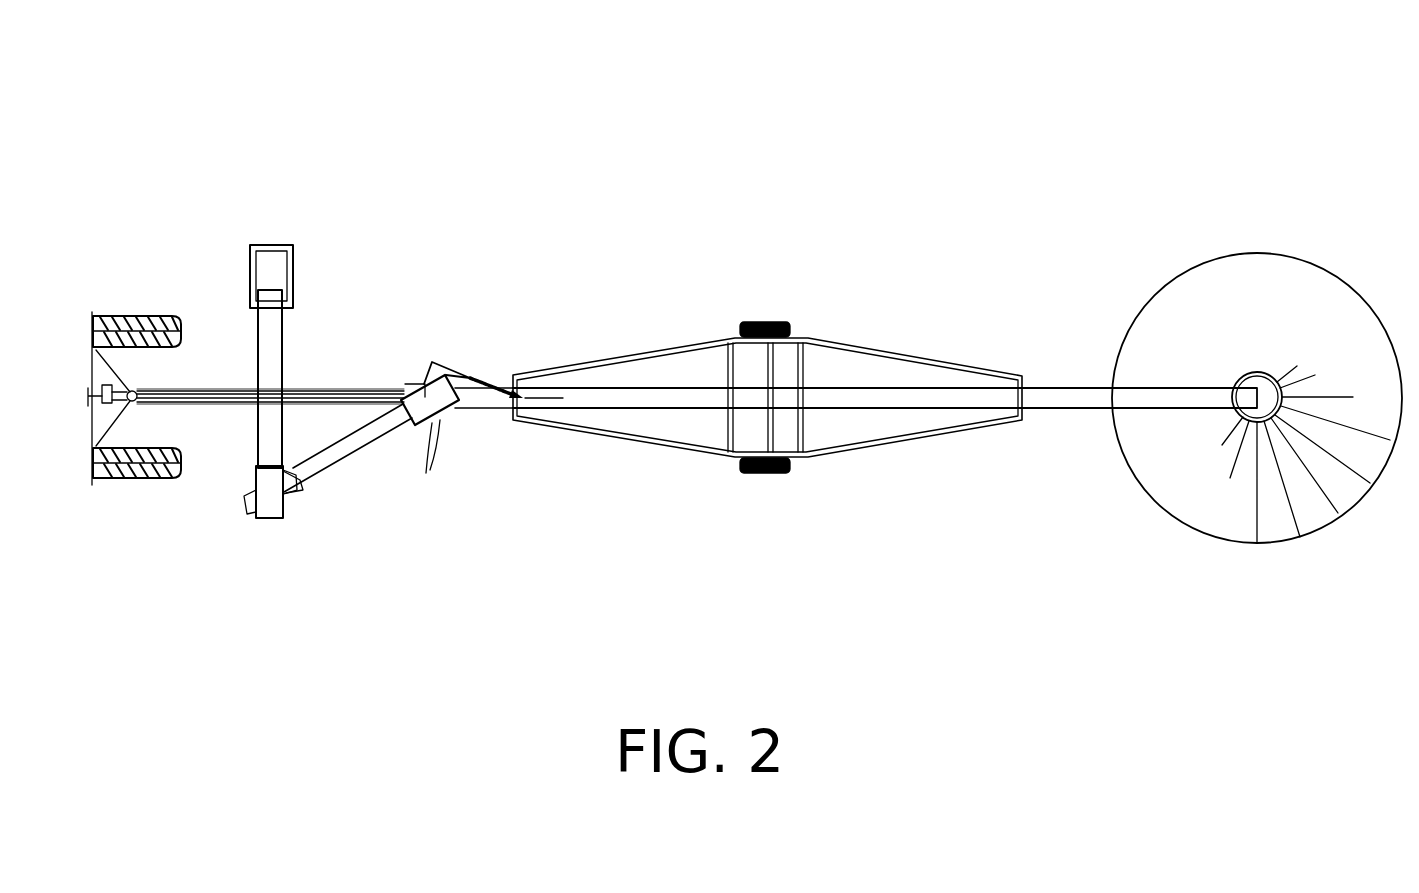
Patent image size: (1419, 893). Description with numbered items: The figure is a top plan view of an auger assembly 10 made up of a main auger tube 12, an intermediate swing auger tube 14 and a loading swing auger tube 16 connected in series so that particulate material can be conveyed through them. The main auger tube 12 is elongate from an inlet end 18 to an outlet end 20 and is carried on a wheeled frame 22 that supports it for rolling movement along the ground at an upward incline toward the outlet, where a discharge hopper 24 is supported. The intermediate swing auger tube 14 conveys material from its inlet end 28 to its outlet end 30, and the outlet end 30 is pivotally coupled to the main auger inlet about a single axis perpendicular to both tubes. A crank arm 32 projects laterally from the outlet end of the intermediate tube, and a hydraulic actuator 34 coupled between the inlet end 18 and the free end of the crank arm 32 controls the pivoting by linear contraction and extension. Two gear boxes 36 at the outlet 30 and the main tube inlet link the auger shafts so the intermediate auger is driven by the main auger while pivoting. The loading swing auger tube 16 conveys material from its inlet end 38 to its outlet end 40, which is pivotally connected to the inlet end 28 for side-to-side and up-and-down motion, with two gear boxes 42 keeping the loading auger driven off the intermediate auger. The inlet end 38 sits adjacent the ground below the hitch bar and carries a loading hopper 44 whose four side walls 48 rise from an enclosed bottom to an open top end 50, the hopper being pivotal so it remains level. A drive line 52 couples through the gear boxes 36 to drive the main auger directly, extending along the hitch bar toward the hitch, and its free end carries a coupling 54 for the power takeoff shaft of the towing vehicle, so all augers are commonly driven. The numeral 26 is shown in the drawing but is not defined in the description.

The auger assembly 10 is at (558, 190).
The main auger tube 12 is at (887, 397).
The intermediate swing auger tube 14 is at (355, 444).
The loading swing auger tube 16 is at (274, 360).
The inlet end 18 is at (470, 410).
The outlet end 20 is at (1220, 402).
The wheeled frame 22 is at (877, 447).
The discharge hopper 24 is at (1265, 385).
The axle assembly 26 is at (207, 398).
The inlet end 28 is at (297, 473).
The outlet end 30 is at (392, 418).
The crank arm 32 is at (428, 360).
The hydraulic actuator 34 is at (483, 378).
The gear boxes 36 is at (434, 470).
The inlet end 38 is at (270, 320).
The outlet end 40 is at (257, 466).
The gear boxes 42 is at (273, 518).
The loading hopper 44 is at (267, 193).
The side walls 48 is at (286, 262).
The open top end 50 is at (266, 275).
The drive line 52 is at (167, 385).
The coupling 54 is at (103, 377).